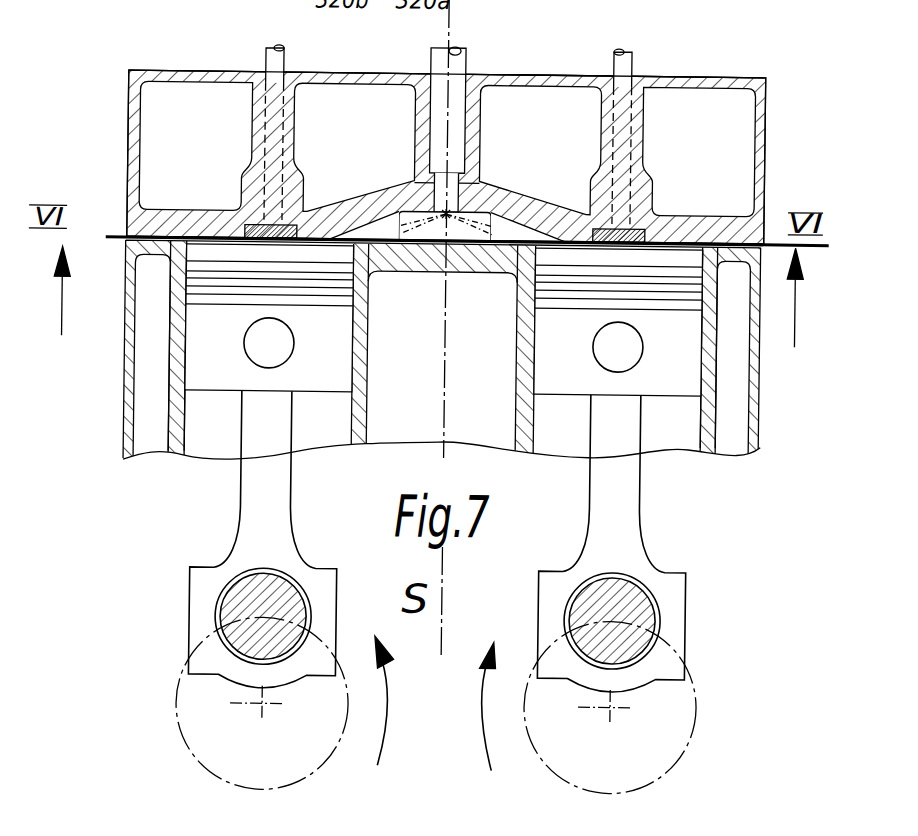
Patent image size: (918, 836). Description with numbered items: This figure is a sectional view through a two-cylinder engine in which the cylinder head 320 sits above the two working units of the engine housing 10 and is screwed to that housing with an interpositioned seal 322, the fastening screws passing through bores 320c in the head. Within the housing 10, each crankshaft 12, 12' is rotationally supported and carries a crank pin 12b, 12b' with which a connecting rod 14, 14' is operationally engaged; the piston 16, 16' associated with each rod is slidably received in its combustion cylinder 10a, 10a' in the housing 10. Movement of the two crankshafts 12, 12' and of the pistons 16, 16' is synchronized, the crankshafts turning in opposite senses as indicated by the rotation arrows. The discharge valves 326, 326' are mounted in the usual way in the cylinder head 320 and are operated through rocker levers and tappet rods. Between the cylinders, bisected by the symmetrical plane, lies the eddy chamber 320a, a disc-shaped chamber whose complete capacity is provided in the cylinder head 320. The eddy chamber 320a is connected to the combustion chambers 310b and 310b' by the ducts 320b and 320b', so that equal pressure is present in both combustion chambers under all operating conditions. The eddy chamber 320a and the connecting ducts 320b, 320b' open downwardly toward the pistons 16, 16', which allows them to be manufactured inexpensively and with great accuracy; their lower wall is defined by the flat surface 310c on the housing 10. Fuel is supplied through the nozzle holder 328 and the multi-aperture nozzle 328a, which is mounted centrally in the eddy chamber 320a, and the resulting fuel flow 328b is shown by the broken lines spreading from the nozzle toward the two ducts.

The engine housing 10 is at (754, 404).
The combustion cylinder 10a is at (184, 369).
The combustion cylinder 10a' is at (688, 375).
The crankshaft 12 is at (262, 703).
The crankshaft 12' is at (610, 708).
The crank pin 12b is at (223, 616).
The crank pin 12b' is at (657, 621).
The connecting rod 14 is at (252, 539).
The connecting rod 14' is at (616, 543).
The piston 16 is at (268, 338).
The piston 16' is at (617, 343).
The combustion chamber 310b is at (277, 158).
The combustion chamber 310b' is at (617, 151).
The flat surface 310c is at (498, 244).
The cylinder head 320 is at (744, 75).
The eddy chamber 320a is at (428, 244).
The duct 320b is at (357, 205).
The duct 320b' is at (536, 208).
The bore 320c is at (448, 39).
The seal 322 is at (126, 240).
The discharge valve 326 is at (272, 123).
The discharge valve 326' is at (627, 128).
The nozzle holder 328 is at (452, 75).
The multi-aperture nozzle 328a is at (448, 190).
The fuel flow 328b is at (399, 212).